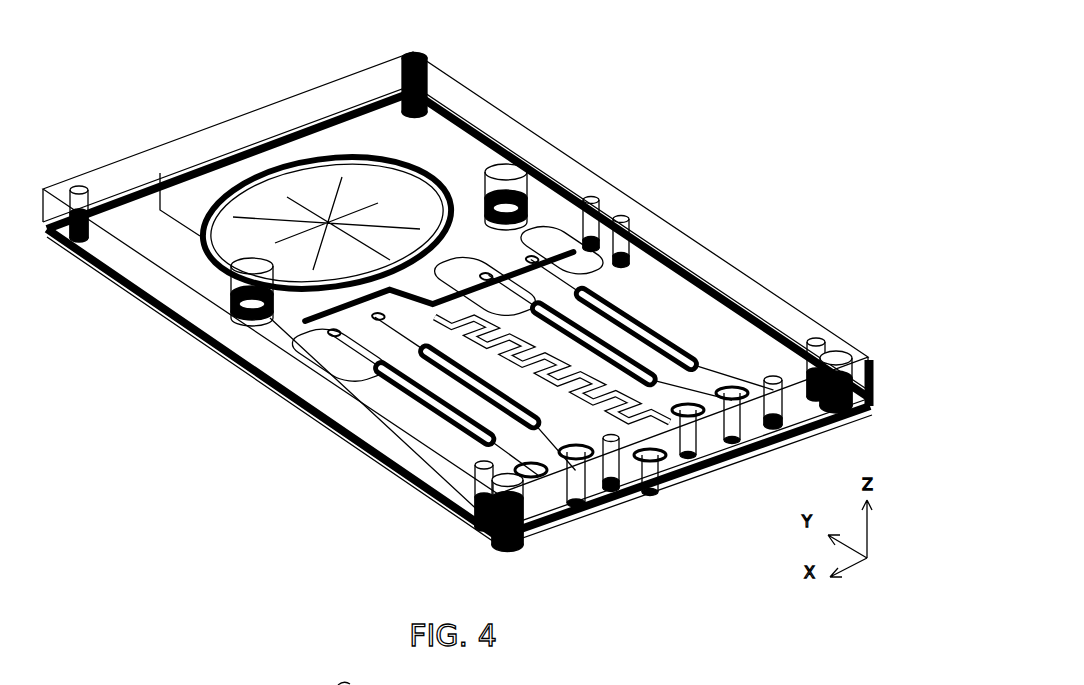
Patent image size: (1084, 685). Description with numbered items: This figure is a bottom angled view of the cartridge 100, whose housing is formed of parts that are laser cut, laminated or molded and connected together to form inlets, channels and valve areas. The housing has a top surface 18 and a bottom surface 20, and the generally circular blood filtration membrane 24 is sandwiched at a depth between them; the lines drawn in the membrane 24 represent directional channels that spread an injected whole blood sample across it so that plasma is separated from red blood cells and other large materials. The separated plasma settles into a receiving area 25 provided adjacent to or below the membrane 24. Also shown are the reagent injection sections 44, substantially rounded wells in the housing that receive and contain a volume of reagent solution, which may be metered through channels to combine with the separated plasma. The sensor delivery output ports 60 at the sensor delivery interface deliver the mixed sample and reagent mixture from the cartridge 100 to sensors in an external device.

The top surface 18 is at (100, 173).
The bottom surface 20 is at (130, 257).
The blood filtration membrane 24 is at (418, 196).
The receiving area 25 is at (212, 250).
The reagent injection section 44 is at (207, 233).
The sensor delivery output port 60 is at (654, 488).
The cartridge 100 is at (748, 143).